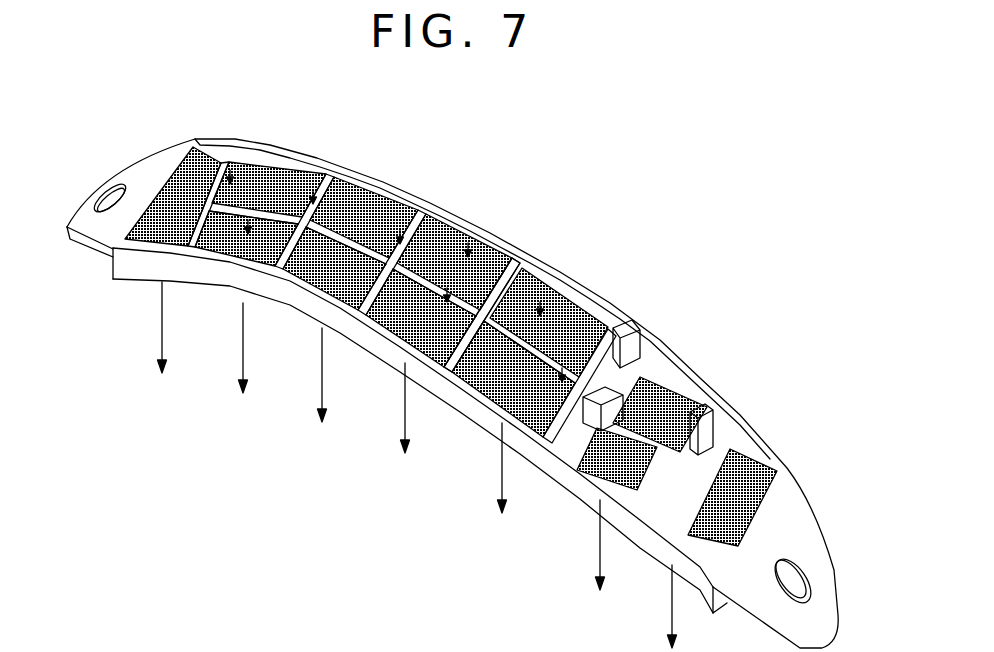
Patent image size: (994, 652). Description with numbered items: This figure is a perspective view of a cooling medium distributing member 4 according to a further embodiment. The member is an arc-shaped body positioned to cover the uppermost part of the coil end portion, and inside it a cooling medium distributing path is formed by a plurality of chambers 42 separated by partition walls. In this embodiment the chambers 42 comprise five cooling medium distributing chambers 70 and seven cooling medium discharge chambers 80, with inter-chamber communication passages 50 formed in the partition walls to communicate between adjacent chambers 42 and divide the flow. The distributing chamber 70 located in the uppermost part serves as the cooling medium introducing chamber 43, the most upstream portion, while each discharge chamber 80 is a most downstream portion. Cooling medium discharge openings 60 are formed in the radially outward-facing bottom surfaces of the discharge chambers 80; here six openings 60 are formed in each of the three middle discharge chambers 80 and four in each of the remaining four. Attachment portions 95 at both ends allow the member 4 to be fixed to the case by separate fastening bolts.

The cooling medium distributing member 4 is at (712, 212).
The chambers 42 is at (392, 297).
The cooling medium introducing chamber 43 is at (482, 315).
The inter-chamber communication passages 50 is at (249, 218).
The cooling medium discharge openings 60 is at (172, 250).
The cooling medium distributing chambers 70 is at (308, 178).
The cooling medium discharge chambers 80 is at (219, 160).
The attachment portions 95 is at (120, 180).